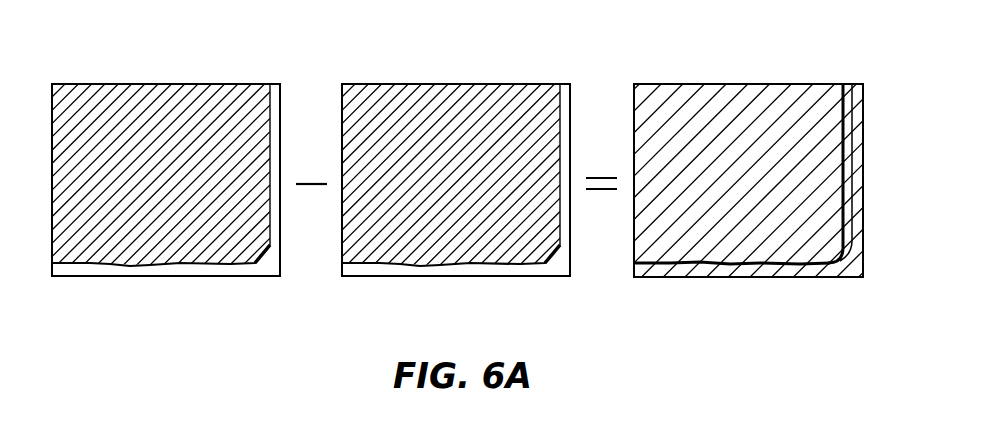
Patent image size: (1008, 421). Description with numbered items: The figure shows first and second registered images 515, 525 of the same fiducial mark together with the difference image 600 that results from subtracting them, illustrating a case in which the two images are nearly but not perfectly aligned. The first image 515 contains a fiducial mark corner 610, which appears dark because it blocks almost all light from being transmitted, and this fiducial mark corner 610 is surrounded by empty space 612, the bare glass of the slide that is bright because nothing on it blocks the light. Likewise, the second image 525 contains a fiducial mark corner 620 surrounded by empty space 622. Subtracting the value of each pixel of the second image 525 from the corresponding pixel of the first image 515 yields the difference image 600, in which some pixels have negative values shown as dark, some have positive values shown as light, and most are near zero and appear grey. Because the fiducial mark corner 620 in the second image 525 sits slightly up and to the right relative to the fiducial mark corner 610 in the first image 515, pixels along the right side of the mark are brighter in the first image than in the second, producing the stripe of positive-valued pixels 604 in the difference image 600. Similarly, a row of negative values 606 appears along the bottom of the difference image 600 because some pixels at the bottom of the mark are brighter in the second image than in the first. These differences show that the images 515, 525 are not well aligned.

The first image 515 is at (197, 84).
The second image 525 is at (485, 84).
The difference image 600 is at (782, 84).
The stripe of positive-valued pixels 604 is at (846, 145).
The row of negative values 606 is at (820, 267).
The fiducial mark corner 610 is at (105, 242).
The empty space 612 is at (262, 281).
The fiducial mark corner 620 is at (393, 242).
The empty space 622 is at (550, 281).